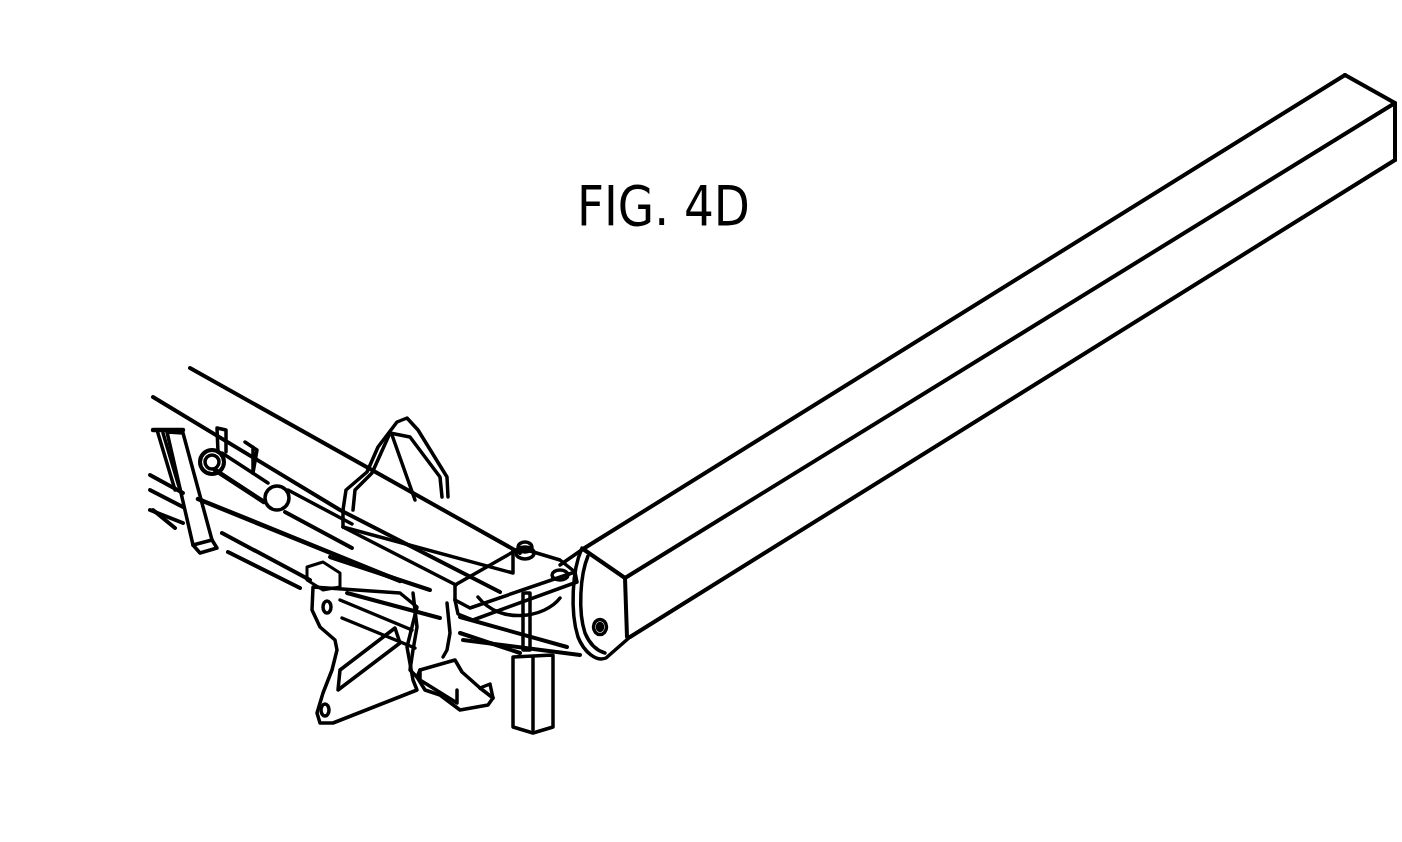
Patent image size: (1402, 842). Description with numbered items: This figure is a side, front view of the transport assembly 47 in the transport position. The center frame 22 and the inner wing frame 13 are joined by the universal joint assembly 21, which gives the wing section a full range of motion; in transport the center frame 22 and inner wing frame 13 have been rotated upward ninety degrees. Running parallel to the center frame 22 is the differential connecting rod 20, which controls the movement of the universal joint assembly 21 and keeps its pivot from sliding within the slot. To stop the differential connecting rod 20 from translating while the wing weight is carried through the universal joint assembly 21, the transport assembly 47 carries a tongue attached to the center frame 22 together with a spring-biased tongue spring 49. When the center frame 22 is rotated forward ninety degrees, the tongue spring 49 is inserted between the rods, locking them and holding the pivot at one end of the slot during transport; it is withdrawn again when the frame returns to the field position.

The inner wing frame 13 is at (908, 370).
The differential connecting rod 20 is at (397, 570).
The universal joint assembly 21 is at (562, 510).
The center frame 22 is at (247, 407).
The transport assembly 47 is at (197, 525).
The tongue spring 49 is at (257, 460).